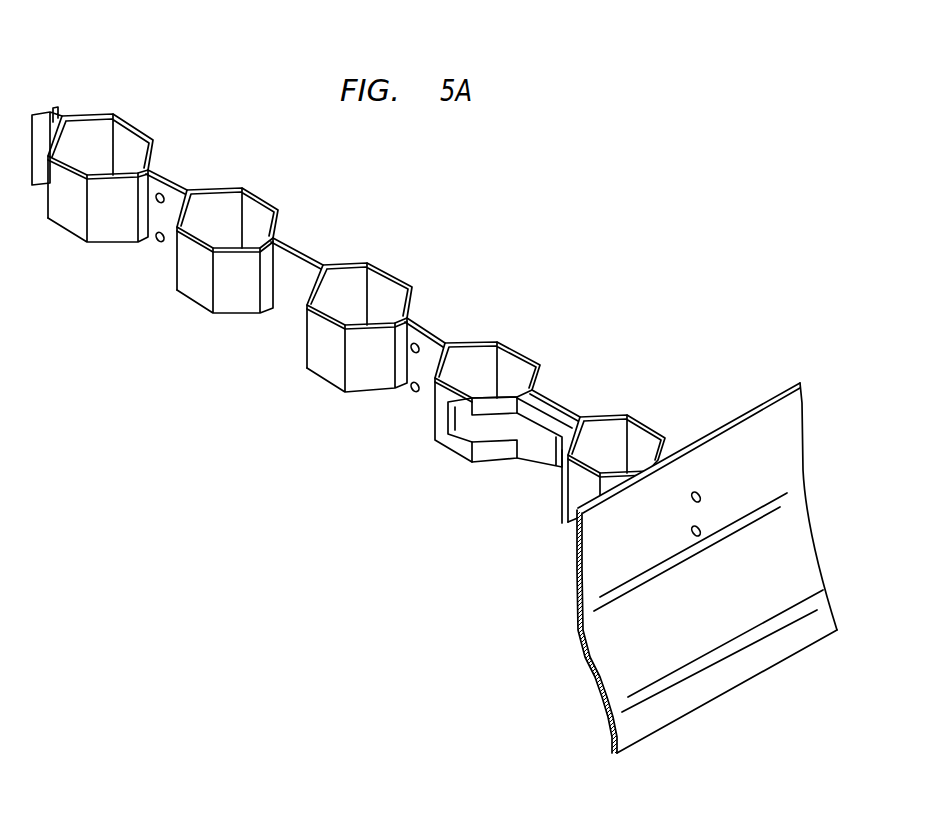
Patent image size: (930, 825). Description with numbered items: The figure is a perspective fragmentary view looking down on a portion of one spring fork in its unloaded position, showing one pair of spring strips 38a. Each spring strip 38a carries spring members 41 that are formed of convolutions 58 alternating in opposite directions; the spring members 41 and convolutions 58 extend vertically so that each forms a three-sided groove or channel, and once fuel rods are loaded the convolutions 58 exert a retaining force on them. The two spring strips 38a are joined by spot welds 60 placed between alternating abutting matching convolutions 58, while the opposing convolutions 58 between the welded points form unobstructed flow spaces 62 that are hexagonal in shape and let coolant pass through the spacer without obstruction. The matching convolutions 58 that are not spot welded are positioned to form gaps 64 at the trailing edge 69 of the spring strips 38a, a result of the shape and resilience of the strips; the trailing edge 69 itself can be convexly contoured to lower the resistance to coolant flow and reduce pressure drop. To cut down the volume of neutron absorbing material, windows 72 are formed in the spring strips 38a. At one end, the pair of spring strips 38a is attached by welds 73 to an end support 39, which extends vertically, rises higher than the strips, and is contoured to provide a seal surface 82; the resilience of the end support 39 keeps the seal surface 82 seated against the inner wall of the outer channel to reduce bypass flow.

The spring members 41 is at (134, 113).
The spring strips 38a is at (178, 182).
The spot welds 60 is at (155, 198).
The gaps 64 is at (54, 108).
The unobstructed flow spaces 62 is at (258, 222).
The trailing edge 69 is at (307, 256).
The convolutions 58 is at (408, 315).
The windows 72 is at (467, 427).
The end support 39 is at (785, 458).
The seal surface 82 is at (803, 593).
The welds 73 is at (700, 499).